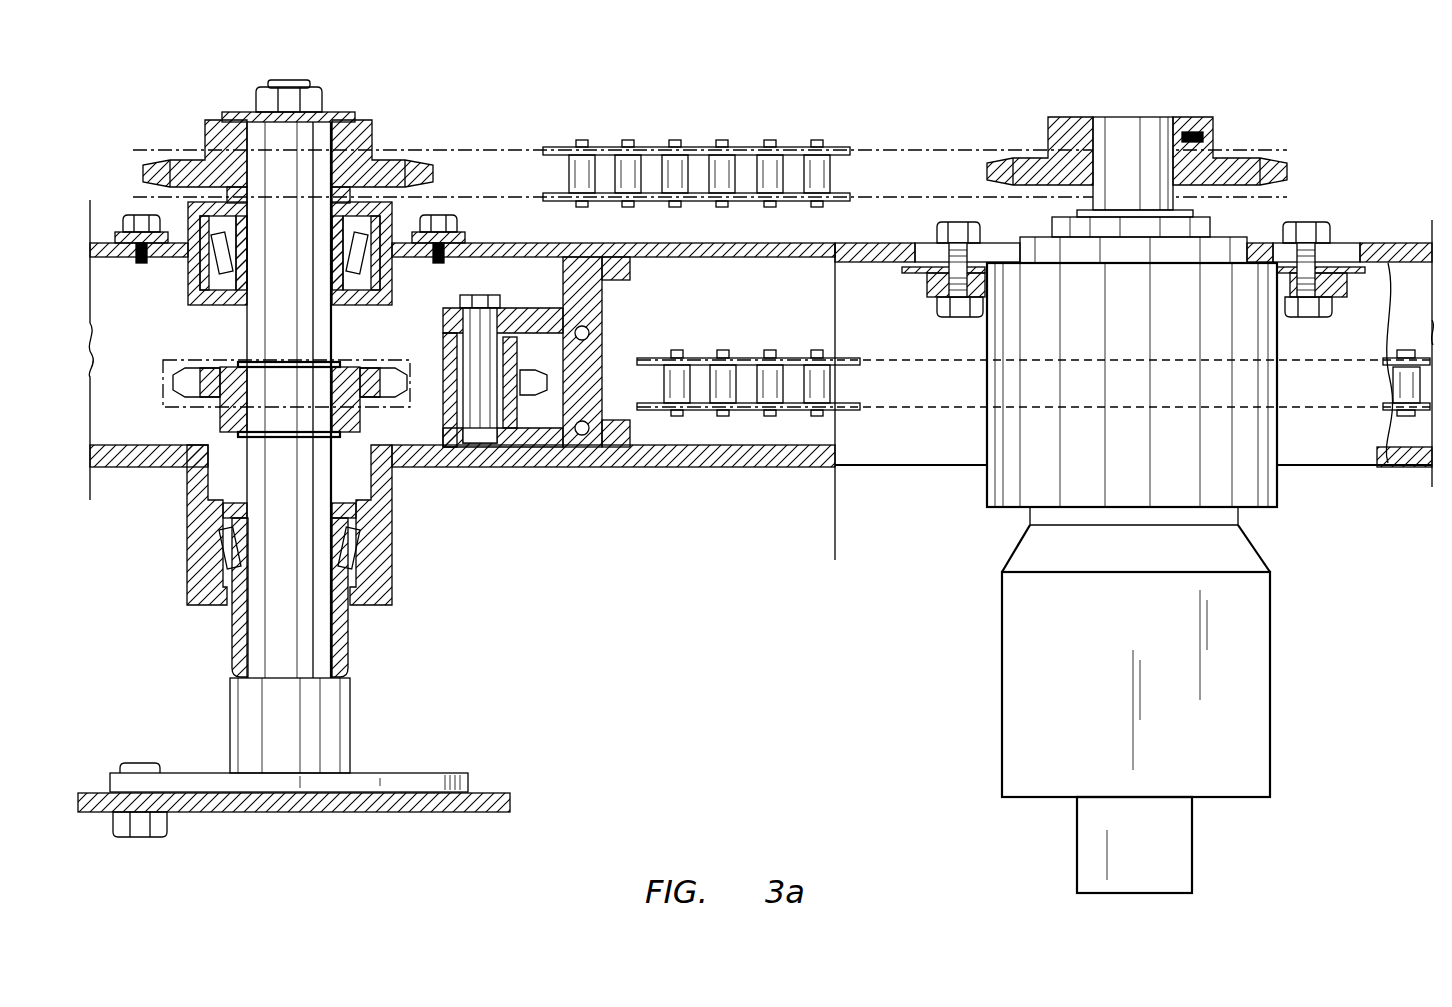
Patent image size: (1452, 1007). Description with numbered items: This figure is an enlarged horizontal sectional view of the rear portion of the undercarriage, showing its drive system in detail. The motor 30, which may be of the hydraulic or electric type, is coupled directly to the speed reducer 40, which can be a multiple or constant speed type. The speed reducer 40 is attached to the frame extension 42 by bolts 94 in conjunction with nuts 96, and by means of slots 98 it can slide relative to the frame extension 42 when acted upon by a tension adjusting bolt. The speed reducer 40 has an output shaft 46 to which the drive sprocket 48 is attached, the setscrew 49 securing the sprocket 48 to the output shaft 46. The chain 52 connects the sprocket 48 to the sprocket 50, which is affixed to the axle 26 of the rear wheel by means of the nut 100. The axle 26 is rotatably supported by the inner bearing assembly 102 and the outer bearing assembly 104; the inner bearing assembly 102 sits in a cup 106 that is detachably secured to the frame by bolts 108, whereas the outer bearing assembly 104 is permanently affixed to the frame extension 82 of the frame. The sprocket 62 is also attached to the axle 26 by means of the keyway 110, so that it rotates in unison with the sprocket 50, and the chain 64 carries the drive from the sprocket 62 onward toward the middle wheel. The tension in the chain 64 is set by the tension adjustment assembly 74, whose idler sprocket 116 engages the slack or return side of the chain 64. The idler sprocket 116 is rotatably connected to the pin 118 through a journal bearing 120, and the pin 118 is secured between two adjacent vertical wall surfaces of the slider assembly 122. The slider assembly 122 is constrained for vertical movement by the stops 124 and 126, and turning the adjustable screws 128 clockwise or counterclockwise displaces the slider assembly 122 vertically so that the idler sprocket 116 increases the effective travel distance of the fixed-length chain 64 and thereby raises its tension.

The axle 26 is at (295, 316).
The motor 30 is at (1106, 677).
The speed reducer 40 is at (1146, 345).
The frame extension 42 is at (1375, 252).
The output shaft 46 is at (1138, 135).
The drive sprocket 48 is at (1243, 165).
The setscrew 49 is at (1205, 136).
The sprocket 50 is at (385, 172).
The chain 52 is at (724, 150).
The sprocket 62 is at (222, 412).
The chain 64 is at (741, 403).
The tension adjustment assembly 74 is at (530, 416).
The frame extension 82 is at (390, 542).
The bolt 94 is at (956, 313).
The nut 96 is at (978, 233).
The slot 98 is at (925, 253).
The nut 100 is at (322, 95).
The inner bearing assembly 102 is at (372, 236).
The outer bearing assembly 104 is at (384, 588).
The cup 106 is at (188, 292).
The bolt 108 is at (455, 225).
The keyway 110 is at (338, 388).
The idler sprocket 116 is at (430, 386).
The pin 118 is at (487, 320).
The journal bearing 120 is at (468, 432).
The slider assembly 122 is at (598, 312).
The stop 124 is at (628, 272).
The stop 126 is at (628, 436).
The adjustable screw 128 is at (596, 422).